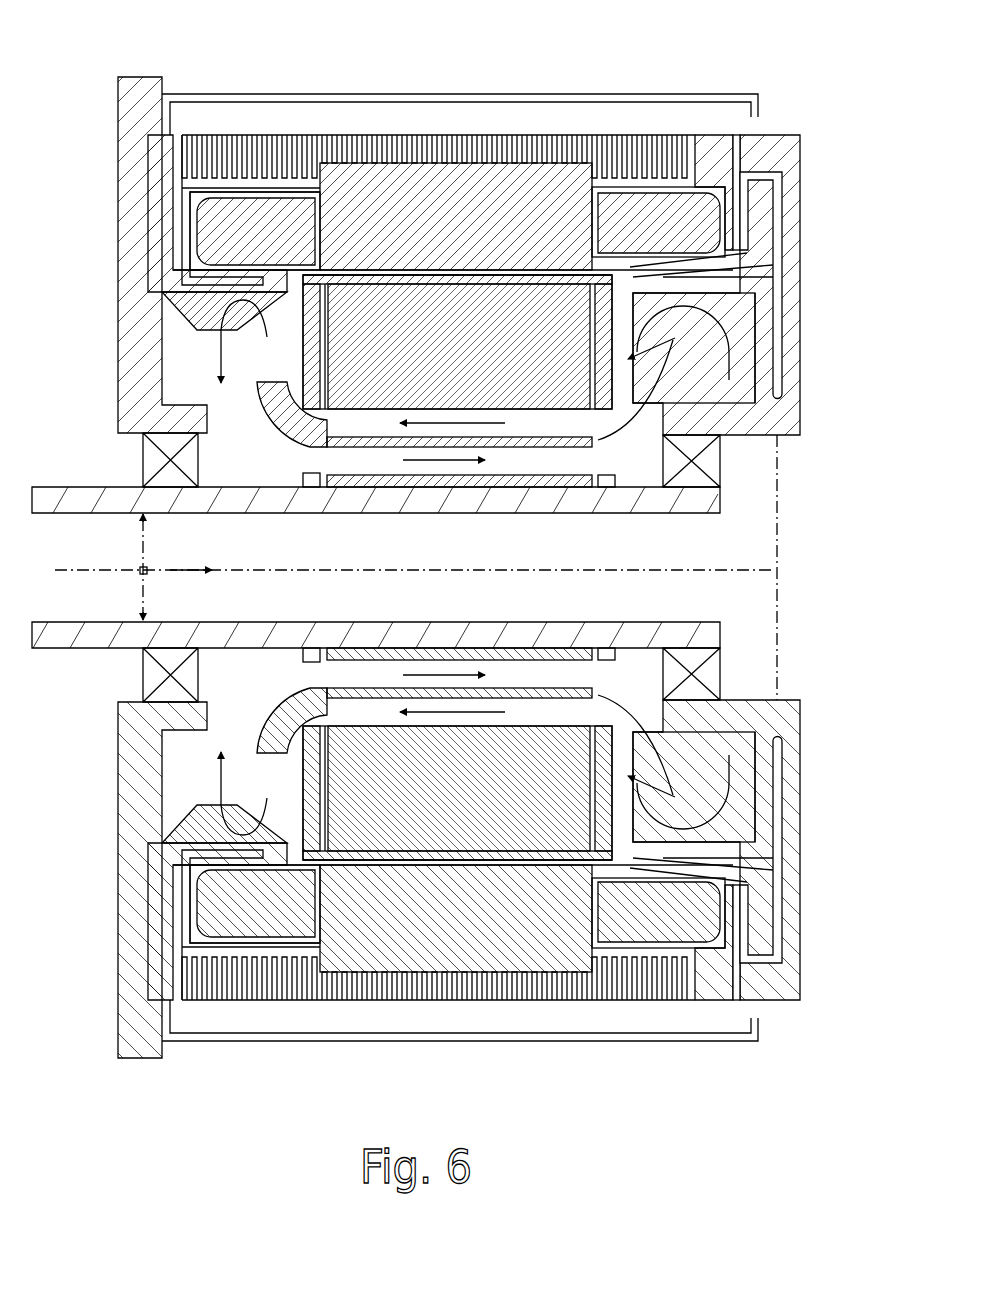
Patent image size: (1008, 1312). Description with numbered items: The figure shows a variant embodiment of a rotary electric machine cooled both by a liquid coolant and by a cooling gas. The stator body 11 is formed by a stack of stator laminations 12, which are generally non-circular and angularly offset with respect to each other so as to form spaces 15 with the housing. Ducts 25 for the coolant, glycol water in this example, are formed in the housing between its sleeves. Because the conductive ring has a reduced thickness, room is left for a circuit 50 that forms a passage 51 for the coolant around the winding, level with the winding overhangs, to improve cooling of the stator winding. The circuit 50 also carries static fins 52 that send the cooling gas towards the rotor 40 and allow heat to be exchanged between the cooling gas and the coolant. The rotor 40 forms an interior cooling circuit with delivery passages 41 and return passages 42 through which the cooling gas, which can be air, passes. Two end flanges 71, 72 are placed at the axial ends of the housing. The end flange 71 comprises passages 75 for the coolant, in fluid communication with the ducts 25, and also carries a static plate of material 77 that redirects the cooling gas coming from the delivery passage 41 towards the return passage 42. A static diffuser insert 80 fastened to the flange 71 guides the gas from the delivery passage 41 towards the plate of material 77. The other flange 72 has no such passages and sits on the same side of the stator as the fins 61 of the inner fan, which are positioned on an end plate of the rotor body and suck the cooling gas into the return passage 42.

The stator body 11 is at (462, 226).
The stator laminations 12 is at (540, 137).
The spaces 15 is at (566, 137).
The ducts 25 is at (430, 120).
The rotor 40 is at (472, 358).
The delivery passages 41 is at (532, 458).
The return passages 42 is at (381, 432).
The circuit 50 is at (160, 233).
The passage 51 is at (180, 272).
The static fins 52 is at (178, 303).
The fins 61 is at (296, 447).
The end flange 71 is at (804, 196).
The end flange 72 is at (118, 192).
The passages 75 is at (785, 238).
The static plate of material 77 is at (714, 350).
The static diffuser insert 80 is at (645, 400).